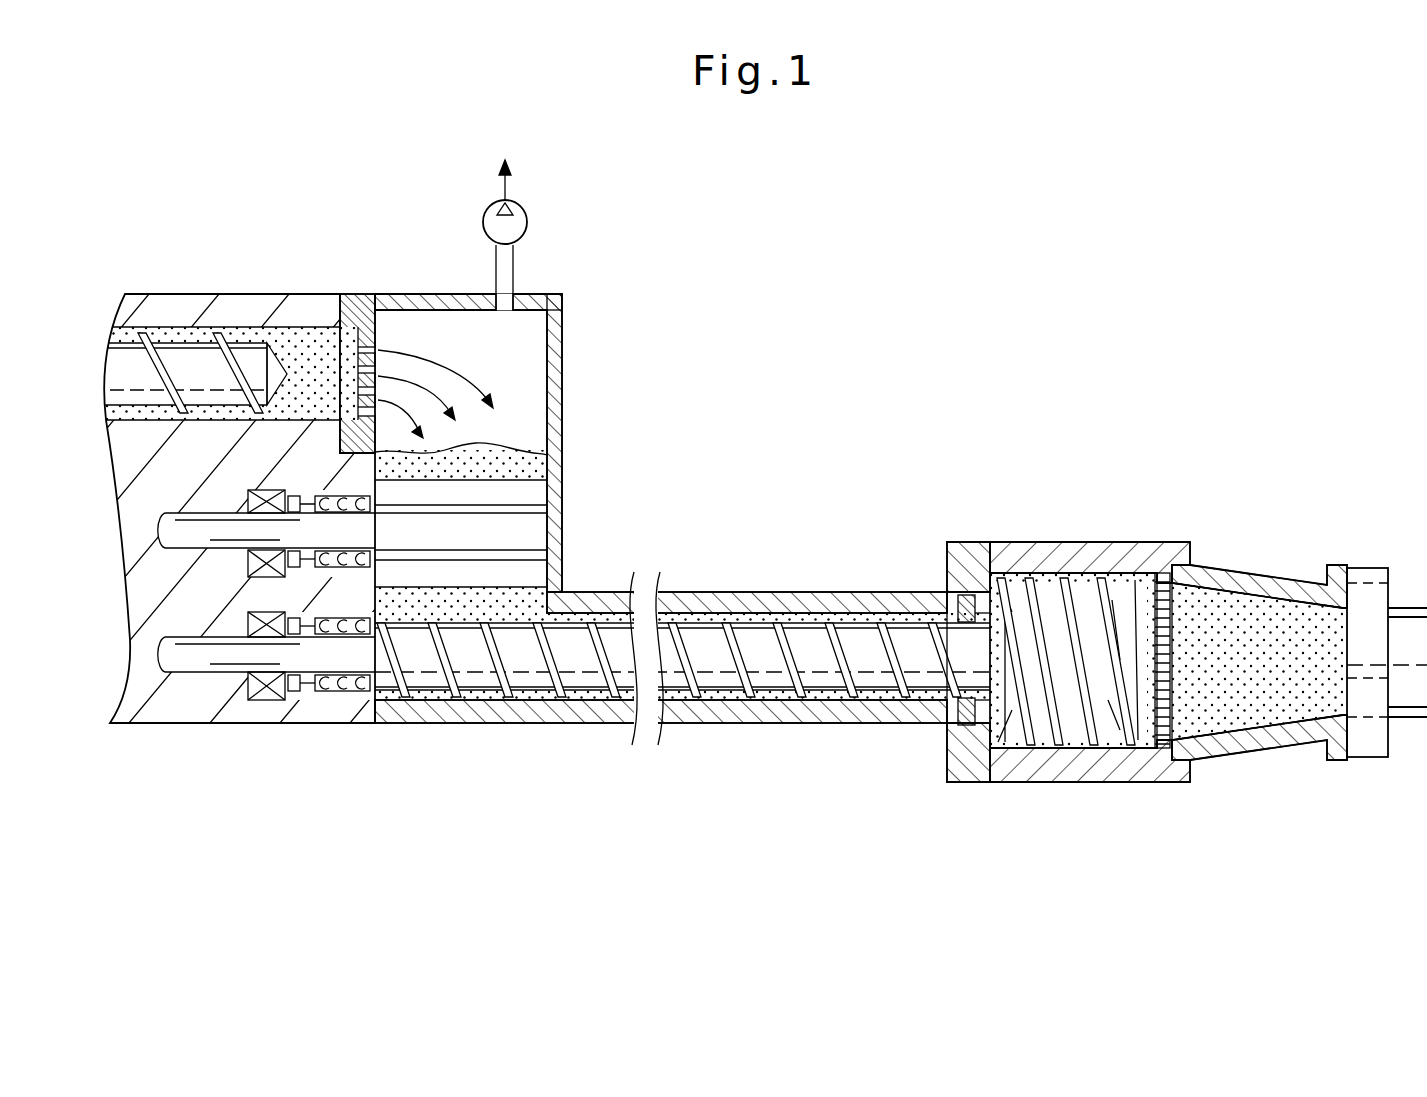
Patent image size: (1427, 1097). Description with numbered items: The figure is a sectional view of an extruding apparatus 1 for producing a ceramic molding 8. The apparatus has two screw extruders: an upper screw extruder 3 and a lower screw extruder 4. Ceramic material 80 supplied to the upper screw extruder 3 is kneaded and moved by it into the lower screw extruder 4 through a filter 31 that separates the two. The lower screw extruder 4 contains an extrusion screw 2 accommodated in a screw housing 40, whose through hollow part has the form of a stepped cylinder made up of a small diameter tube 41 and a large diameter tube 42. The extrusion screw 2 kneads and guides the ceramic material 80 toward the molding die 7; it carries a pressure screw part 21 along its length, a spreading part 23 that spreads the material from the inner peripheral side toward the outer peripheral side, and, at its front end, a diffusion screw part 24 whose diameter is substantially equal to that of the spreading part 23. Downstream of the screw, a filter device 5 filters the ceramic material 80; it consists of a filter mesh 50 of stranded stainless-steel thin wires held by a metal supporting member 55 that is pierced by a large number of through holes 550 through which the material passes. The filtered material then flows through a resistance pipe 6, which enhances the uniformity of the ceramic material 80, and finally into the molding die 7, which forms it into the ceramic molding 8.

The extruding apparatus 1 is at (936, 362).
The extrusion screw 2 is at (802, 623).
The upper screw extruder 3 is at (207, 299).
The screw extruder 4 is at (585, 727).
The filter device 5 is at (1170, 774).
The resistance pipe 6 is at (1283, 760).
The molding die 7 is at (1362, 760).
The ceramic molding 8 is at (1418, 600).
The pressure screw part 21 is at (765, 672).
The spreading part 23 is at (1006, 581).
The diffusion screw part 24 is at (1104, 571).
The filter 31 is at (360, 294).
The screw housing 40 is at (882, 720).
The small diameter tube 41 is at (826, 684).
The large diameter tube 42 is at (1007, 772).
The filter mesh 50 is at (1140, 766).
The supporting member 55 is at (1163, 568).
The ceramic material 80 is at (318, 333).
The through holes 550 is at (1200, 755).